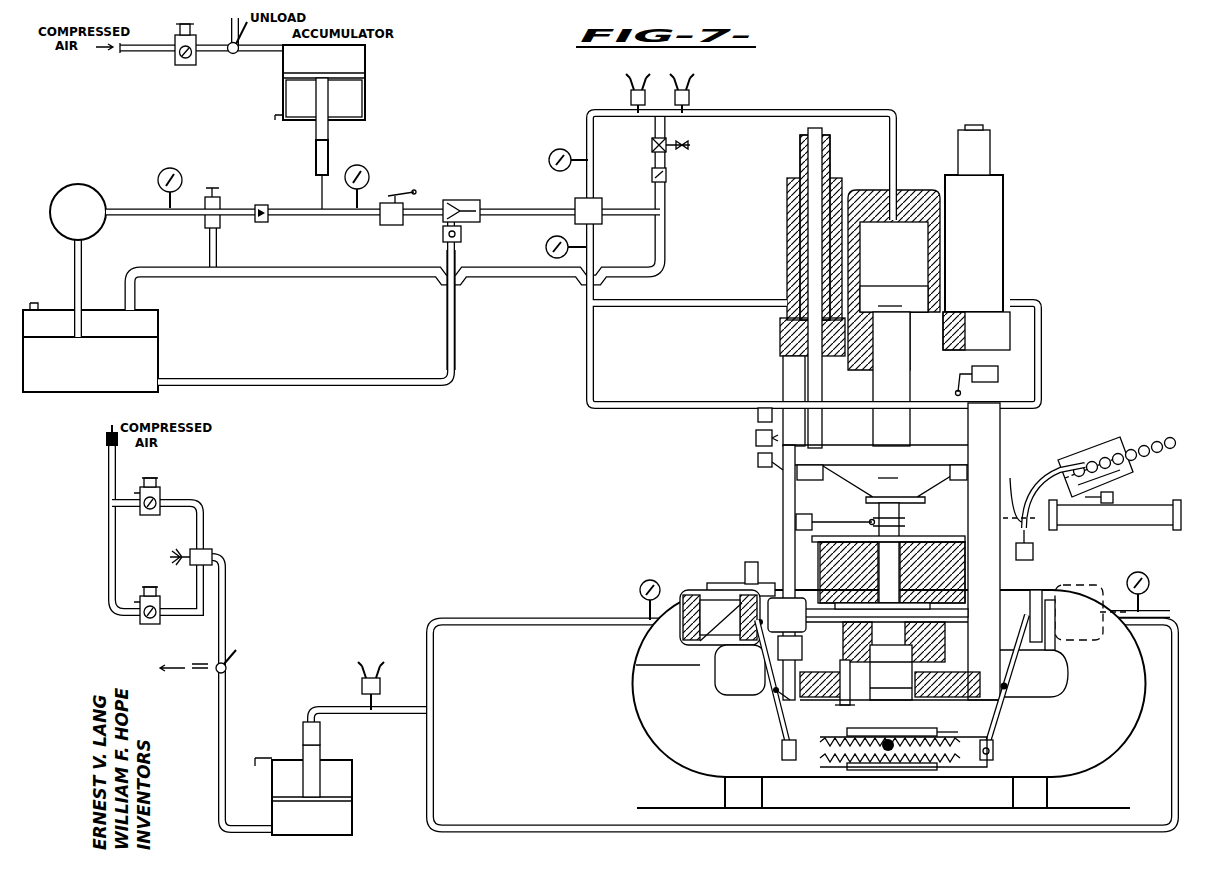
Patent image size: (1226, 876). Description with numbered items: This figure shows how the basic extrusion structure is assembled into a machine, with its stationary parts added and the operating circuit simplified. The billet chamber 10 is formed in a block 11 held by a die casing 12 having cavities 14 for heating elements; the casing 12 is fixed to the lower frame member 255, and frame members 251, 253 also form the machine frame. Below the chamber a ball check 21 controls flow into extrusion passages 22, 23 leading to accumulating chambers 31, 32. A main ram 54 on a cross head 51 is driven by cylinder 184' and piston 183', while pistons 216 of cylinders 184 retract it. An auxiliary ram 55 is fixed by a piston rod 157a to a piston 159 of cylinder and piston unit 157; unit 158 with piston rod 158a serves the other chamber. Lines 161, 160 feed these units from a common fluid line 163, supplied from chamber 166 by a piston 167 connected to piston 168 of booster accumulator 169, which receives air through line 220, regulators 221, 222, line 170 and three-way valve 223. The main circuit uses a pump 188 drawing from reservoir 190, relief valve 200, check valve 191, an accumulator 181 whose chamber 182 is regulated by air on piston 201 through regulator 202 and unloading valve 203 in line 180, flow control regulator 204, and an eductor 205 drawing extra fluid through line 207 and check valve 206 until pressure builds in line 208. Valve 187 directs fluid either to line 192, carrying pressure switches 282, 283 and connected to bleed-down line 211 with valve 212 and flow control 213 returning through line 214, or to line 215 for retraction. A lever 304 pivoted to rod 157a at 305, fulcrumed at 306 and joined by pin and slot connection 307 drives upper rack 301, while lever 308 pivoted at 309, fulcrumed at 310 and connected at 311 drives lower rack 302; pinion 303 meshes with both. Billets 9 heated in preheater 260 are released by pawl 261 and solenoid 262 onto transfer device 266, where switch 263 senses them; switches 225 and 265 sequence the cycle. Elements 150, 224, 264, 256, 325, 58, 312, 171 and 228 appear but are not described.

The air line 180 is at (172, 50).
The precision air pressure regulator 202 is at (185, 66).
The unloading valve 203 is at (242, 58).
The piston 201 is at (366, 78).
The accumulator 181 is at (366, 103).
The chamber 182 is at (330, 160).
The pump 188 is at (98, 190).
The relief valve 200 is at (222, 201).
The check valve 191 is at (268, 220).
The hydraulic flow control regulator 204 is at (390, 228).
The reservoir 190 is at (160, 357).
The return line 214 is at (363, 280).
The line 207 is at (353, 378).
The check valve 206 is at (462, 250).
The eductor 205 is at (470, 222).
The line 208 is at (542, 195).
The hydraulic valve 187 is at (600, 200).
The line 192 is at (706, 113).
The hydraulic pressure switch 282 is at (642, 82).
The hydraulic pressure switch 283 is at (687, 82).
The return flow line 211 is at (688, 141).
The hydraulic valve 212 is at (652, 145).
The flow control means 213 is at (668, 176).
The line 215 is at (590, 247).
The pistons 216 is at (800, 240).
The cylinders 184 is at (893, 240).
The cylinder 184' is at (895, 266).
The piston 183' is at (894, 267).
The limit switch 256 is at (1000, 374).
The frame member 251 is at (786, 378).
The switch 225 is at (750, 420).
The limit switch 264 is at (754, 438).
The limit switch 224 is at (750, 466).
The frame member 253 is at (1002, 436).
The press frame 150 is at (783, 500).
The switch 265 is at (796, 522).
The cross head 51 is at (881, 531).
The main ram 54 is at (905, 522).
The cylinder and piston unit 157 is at (718, 585).
The bracket 325 is at (903, 599).
The cavities 14 is at (828, 552).
The die casing 12 is at (830, 572).
The billet chamber 10 is at (965, 560).
The block 11 is at (965, 576).
The ball check 21 is at (975, 600).
The extrusion passage 22 is at (787, 615).
The auxiliary ram 55 is at (788, 640).
The extrusion passage 23 is at (962, 610).
The lower punch 58 is at (945, 625).
The accumulating chamber 31 is at (848, 642).
The accumulating chamber 32 is at (937, 642).
The pivot 305 is at (745, 622).
The piston rod 157a is at (740, 670).
The piston 159 is at (710, 660).
The lower frame member 255 is at (838, 700).
The fulcrum 306 is at (774, 694).
The lever 304 is at (770, 712).
The pin and slot connection 307 is at (770, 690).
The lower rack member 302 is at (920, 736).
The pivot 312 is at (866, 748).
The pinion 303 is at (890, 750).
The upper rack member 301 is at (946, 772).
The fulcrum 310 is at (1008, 686).
The lever 308 is at (996, 724).
The pin and slot connection 311 is at (994, 752).
The hydraulic line 161 is at (585, 618).
The hydraulic line 160 is at (1170, 618).
The billet 9 is at (1082, 458).
The preheater 260 is at (1128, 450).
The billet transfer device 266 is at (1045, 492).
The billet release pawl 261 is at (1140, 478).
The solenoid 262 is at (1113, 498).
The switch 263 is at (1033, 552).
The cylinder and piston unit 158 is at (1075, 585).
The piston rod 158a is at (1093, 608).
The pivotal connection 309 is at (1066, 625).
The air supply line 220 is at (107, 480).
The low pressure regulator 221 is at (160, 500).
The high pressure regulator 222 is at (141, 613).
The three-way air control valve 223 is at (212, 556).
The unload valve 171 is at (232, 668).
The air line 170 is at (227, 722).
The pressure switch 228 is at (362, 686).
The common fluid line 163 is at (425, 710).
The chamber 166 is at (303, 733).
The piston 167 is at (320, 762).
The piston 168 is at (350, 798).
The booster accumulator 169 is at (352, 815).